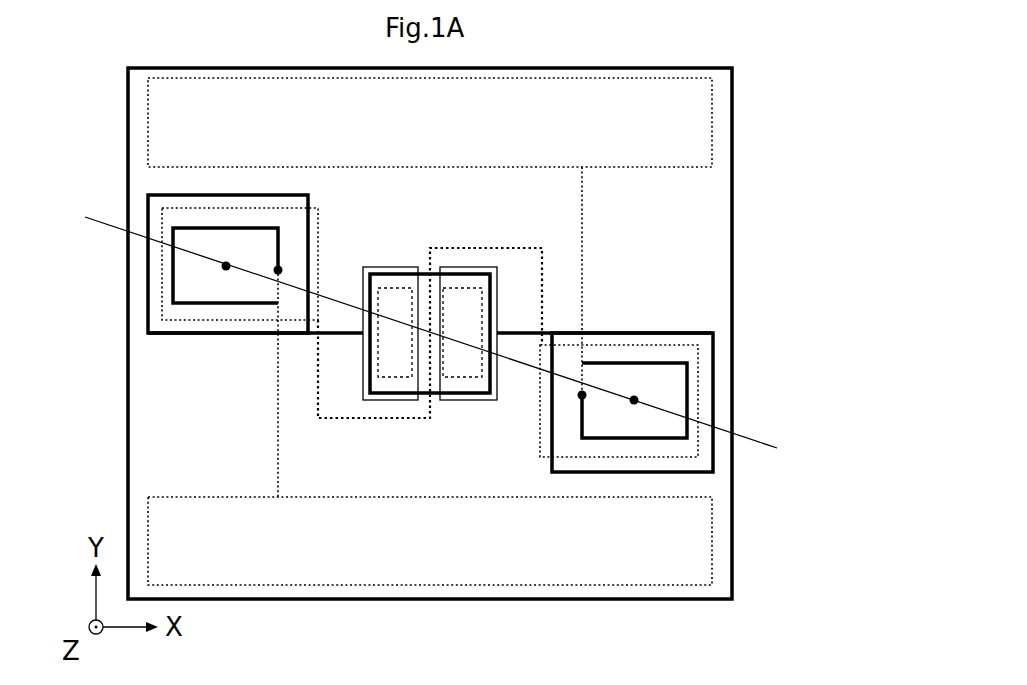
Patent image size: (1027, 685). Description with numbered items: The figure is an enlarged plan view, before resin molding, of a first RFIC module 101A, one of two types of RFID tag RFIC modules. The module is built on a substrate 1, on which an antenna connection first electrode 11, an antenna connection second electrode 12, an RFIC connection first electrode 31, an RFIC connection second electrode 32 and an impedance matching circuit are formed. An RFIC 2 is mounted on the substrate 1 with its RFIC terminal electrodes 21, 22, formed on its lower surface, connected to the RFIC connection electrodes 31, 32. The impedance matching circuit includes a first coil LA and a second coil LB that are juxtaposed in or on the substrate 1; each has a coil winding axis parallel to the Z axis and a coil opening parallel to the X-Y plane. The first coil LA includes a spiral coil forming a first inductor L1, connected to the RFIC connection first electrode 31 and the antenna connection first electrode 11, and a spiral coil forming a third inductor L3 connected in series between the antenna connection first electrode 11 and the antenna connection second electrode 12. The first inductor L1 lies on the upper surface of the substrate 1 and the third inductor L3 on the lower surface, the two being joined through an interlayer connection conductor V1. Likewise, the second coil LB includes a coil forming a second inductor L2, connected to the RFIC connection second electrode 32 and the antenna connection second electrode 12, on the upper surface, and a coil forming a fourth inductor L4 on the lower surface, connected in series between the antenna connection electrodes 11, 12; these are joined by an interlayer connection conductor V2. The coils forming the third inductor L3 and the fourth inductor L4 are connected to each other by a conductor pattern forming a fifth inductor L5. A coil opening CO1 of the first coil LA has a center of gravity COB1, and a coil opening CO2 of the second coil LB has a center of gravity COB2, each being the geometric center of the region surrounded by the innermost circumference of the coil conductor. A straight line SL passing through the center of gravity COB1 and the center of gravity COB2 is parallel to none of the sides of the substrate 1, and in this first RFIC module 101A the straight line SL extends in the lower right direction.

The first RFIC module 101A is at (412, 326).
The substrate 1 is at (712, 198).
The antenna connection second electrode 12 is at (640, 126).
The antenna connection first electrode 11 is at (655, 548).
The third inductor L3 is at (162, 266).
The coil opening CO1 is at (226, 268).
The interlayer connection conductor V1 is at (280, 268).
The center of gravity COB1 is at (193, 278).
The first coil LA is at (159, 356).
The first inductor L1 is at (225, 336).
The second inductor L2 is at (625, 333).
The RFIC connection first electrode 31 is at (378, 268).
The RFIC connection second electrode 32 is at (492, 400).
The RFIC 2 is at (424, 396).
The RFIC terminal electrode 21 is at (406, 288).
The RFIC terminal electrode 22 is at (468, 378).
The fifth inductor L5 is at (480, 248).
The fourth inductor L4 is at (698, 396).
The coil opening CO2 is at (666, 388).
The interlayer connection conductor V2 is at (582, 398).
The center of gravity COB2 is at (636, 398).
The second coil LB is at (695, 311).
The straight line SL is at (765, 440).